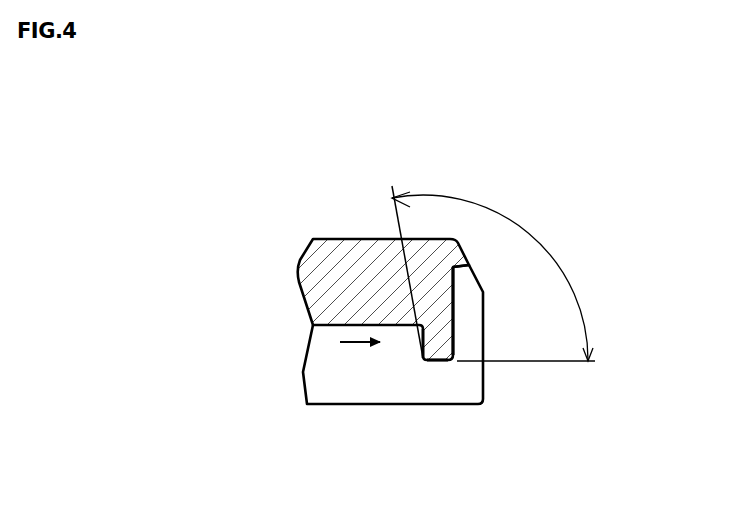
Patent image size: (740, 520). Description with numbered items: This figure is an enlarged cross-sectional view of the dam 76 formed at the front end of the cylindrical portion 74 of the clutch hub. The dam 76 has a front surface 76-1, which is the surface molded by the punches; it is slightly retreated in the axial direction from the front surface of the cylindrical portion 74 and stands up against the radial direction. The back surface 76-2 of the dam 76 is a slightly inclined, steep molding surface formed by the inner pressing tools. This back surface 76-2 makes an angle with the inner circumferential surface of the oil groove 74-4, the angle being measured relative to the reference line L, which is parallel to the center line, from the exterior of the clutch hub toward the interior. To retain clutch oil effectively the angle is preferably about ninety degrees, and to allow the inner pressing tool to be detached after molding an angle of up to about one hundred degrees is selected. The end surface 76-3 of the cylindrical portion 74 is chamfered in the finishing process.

The cylindrical portion 74 is at (332, 258).
The oil groove 74-4 is at (328, 378).
The dam 76 is at (438, 346).
The front surface 76-1 is at (453, 313).
The back surface 76-2 is at (420, 347).
The end surface 76-3 is at (461, 267).
The reference line L is at (565, 362).